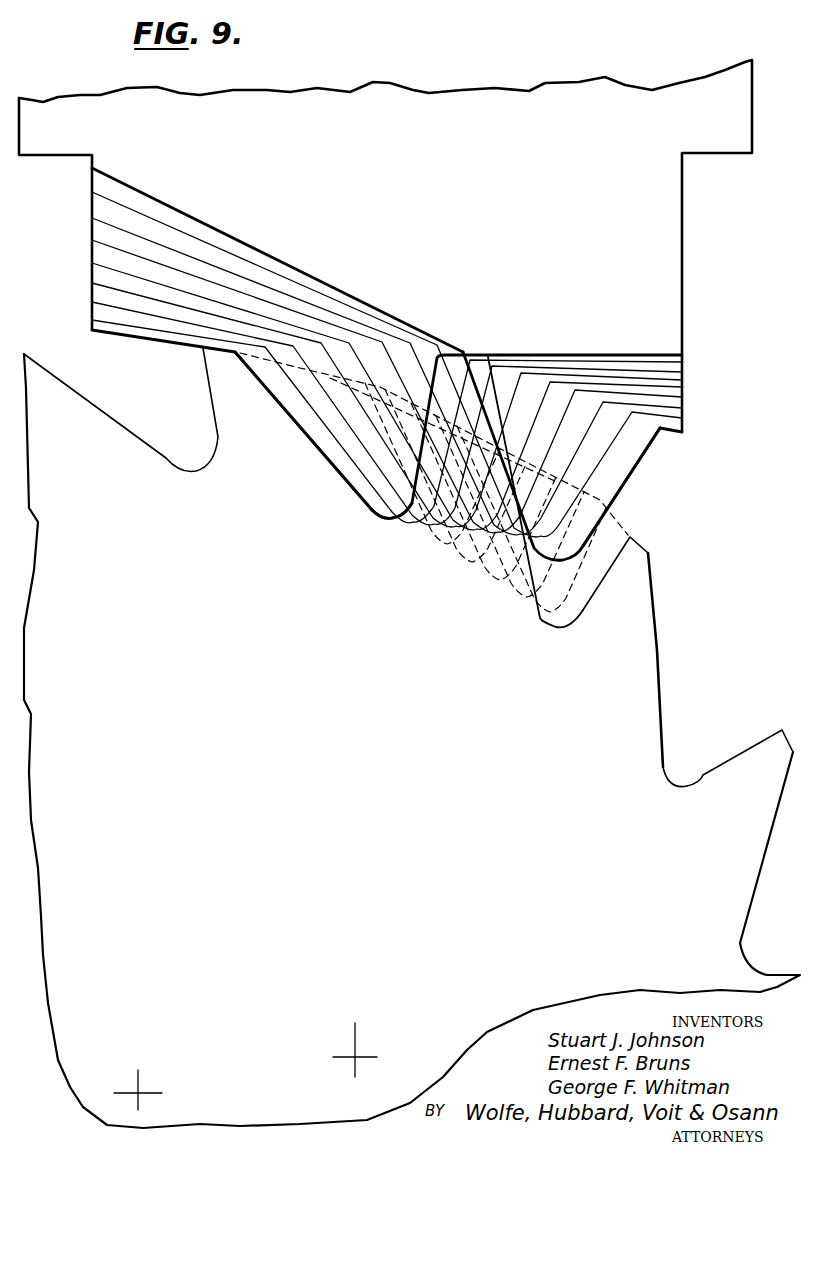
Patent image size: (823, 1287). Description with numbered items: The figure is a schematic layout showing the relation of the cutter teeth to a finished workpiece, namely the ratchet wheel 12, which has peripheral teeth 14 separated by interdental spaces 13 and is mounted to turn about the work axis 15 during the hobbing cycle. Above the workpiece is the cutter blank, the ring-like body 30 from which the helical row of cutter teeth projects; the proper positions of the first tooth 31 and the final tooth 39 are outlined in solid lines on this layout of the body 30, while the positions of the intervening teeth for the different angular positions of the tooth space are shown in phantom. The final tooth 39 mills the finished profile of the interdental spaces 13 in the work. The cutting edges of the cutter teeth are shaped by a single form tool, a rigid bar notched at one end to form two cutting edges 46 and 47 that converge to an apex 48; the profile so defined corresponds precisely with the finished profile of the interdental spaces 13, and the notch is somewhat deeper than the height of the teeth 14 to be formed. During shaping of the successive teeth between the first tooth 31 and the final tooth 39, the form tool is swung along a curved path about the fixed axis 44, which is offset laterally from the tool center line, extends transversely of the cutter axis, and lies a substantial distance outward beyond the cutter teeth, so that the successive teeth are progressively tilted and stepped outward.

The cutter body 30 is at (484, 105).
The cutting edge of form tool 47 is at (440, 367).
The final tooth 39 is at (316, 425).
The first tooth 31 is at (624, 462).
The apex 48 is at (380, 513).
The cutting edge of form tool 46 is at (338, 465).
The peripheral teeth 14 is at (222, 383).
The interdental spaces 13 is at (172, 427).
The ratchet wheel 12 is at (618, 769).
The work axis 15 is at (138, 1093).
The fixed axis 44 is at (355, 1057).